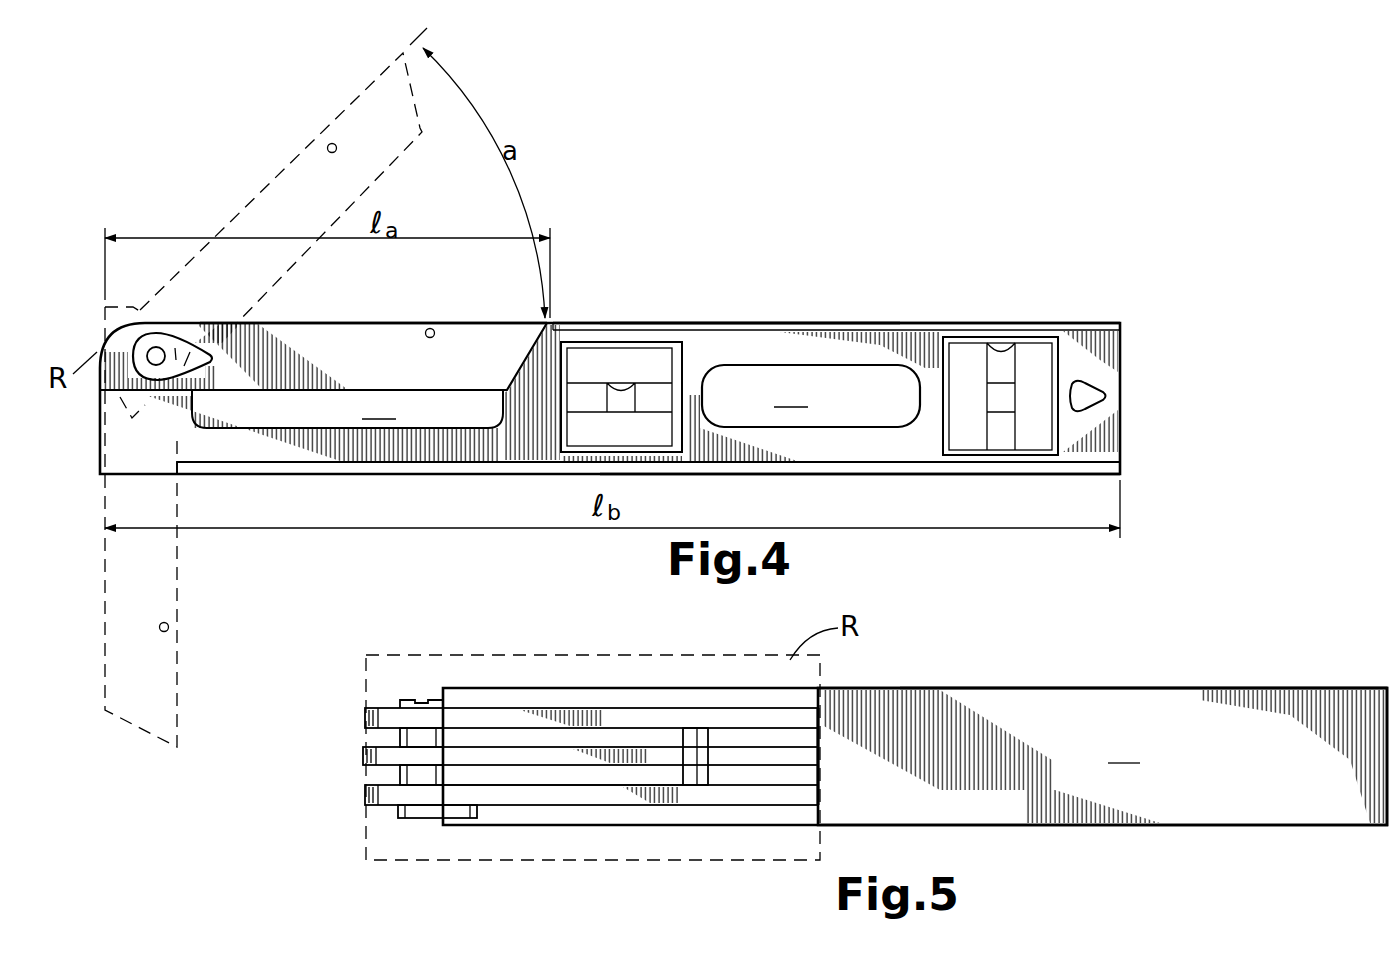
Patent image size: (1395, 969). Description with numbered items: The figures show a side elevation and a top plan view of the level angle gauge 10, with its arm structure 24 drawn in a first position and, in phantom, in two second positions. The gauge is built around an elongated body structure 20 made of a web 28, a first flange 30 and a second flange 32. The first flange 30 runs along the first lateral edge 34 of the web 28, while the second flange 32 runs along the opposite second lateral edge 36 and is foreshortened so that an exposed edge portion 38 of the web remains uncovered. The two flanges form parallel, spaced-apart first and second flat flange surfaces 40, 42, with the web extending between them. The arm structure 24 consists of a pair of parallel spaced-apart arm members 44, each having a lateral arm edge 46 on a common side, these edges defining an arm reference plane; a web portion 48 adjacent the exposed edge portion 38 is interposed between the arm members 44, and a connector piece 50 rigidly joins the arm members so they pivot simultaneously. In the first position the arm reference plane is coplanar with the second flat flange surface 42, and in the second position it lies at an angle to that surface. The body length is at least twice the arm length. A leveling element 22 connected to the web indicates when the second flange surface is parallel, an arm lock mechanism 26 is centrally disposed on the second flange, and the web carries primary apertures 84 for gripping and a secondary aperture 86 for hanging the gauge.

In FIG. 4, the level angle gauge 10 is at (670, 183).
In FIG. 5, the level angle gauge 10 is at (1180, 640).
In FIG. 4, the elongated body structure 20 is at (1062, 318).
In FIG. 5, the elongated body structure 20 is at (1042, 688).
In FIG. 4, the leveling element 22 is at (655, 400).
In FIG. 4, the arm structure 24 is at (358, 320).
In FIG. 5, the arm structure 24 is at (365, 726).
In FIG. 4, the arm lock mechanism 26 is at (138, 352).
In FIG. 5, the arm lock mechanism 26 is at (415, 700).
In FIG. 4, the web 28 is at (1098, 445).
In FIG. 5, the web 28 is at (362, 767).
In FIG. 4, the first flange 30 is at (1120, 470).
In FIG. 4, the second flange 32 is at (1122, 323).
In FIG. 5, the second flange 32 is at (1250, 690).
In FIG. 4, the first lateral edge 34 is at (812, 462).
In FIG. 4, the second lateral edge 36 is at (718, 333).
In FIG. 4, the exposed edge portion 38 is at (553, 322).
In FIG. 5, the exposed edge portion 38 is at (553, 755).
In FIG. 4, the first flat flange surface 40 is at (785, 475).
In FIG. 4, the second flat flange surface 42 is at (725, 322).
In FIG. 5, the second flat flange surface 42 is at (1102, 756).
In FIG. 4, the arm members 44 is at (280, 320).
In FIG. 5, the arm members 44 is at (385, 710).
In FIG. 4, the lateral arm edge 46 is at (450, 320).
In FIG. 5, the lateral arm edge 46 is at (510, 718).
In FIG. 5, the web portion 48 is at (530, 770).
In FIG. 5, the connector piece 50 is at (697, 740).
In FIG. 4, the primary apertures 84 is at (566, 397).
In FIG. 4, the secondary aperture 86 is at (1100, 396).